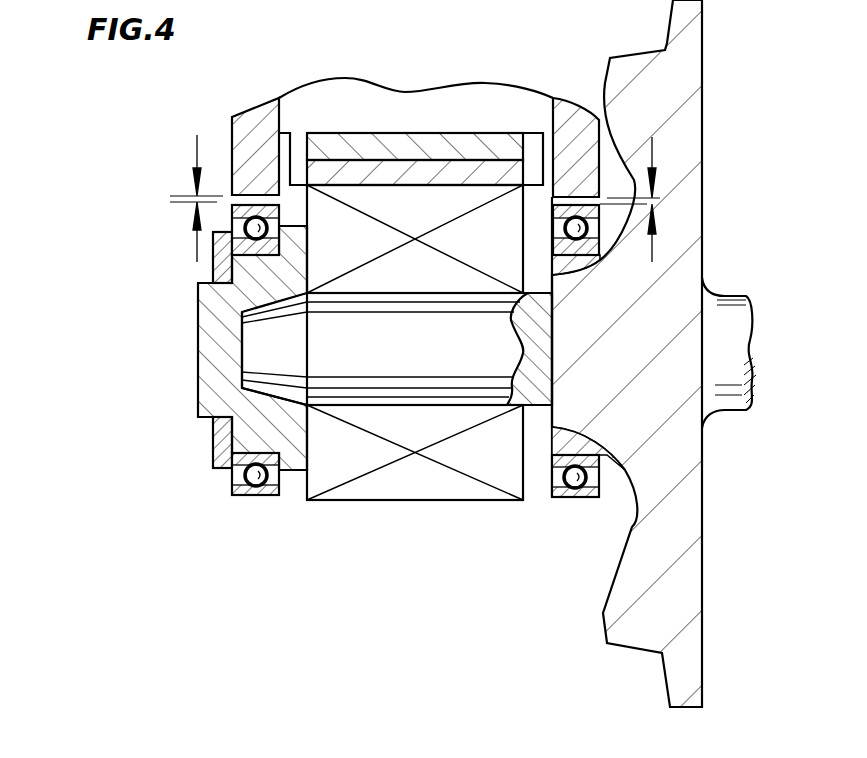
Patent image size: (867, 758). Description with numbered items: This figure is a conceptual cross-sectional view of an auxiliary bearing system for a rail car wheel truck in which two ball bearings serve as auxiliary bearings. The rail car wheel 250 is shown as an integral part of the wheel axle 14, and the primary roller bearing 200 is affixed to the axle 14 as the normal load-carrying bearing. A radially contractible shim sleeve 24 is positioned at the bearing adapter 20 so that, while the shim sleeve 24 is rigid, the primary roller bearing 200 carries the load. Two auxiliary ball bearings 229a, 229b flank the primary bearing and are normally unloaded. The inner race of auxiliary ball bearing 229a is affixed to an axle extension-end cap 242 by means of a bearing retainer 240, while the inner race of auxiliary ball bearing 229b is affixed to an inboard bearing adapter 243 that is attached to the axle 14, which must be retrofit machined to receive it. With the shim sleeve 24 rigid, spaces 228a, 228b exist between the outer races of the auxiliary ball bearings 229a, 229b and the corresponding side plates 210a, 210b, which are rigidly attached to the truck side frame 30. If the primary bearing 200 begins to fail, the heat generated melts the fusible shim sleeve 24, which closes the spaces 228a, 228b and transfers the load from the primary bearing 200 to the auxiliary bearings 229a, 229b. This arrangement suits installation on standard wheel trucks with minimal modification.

The wheel axle 14 is at (422, 370).
The bearing adapter 20 is at (375, 150).
The shim sleeve 24 is at (347, 187).
The truck side frame 30 is at (480, 108).
The primary roller bearing 200 is at (444, 237).
The side plate 210a is at (252, 117).
The side plate 210b is at (573, 113).
The space 228a is at (173, 198).
The space 228b is at (667, 202).
The auxiliary ball bearing 229a is at (268, 230).
The auxiliary ball bearing 229b is at (580, 228).
The bearing retainer 240 is at (220, 265).
The axle extension-end cap 242 is at (217, 357).
The inboard bearing adapter 243 is at (573, 263).
The rail car wheel 250 is at (690, 163).